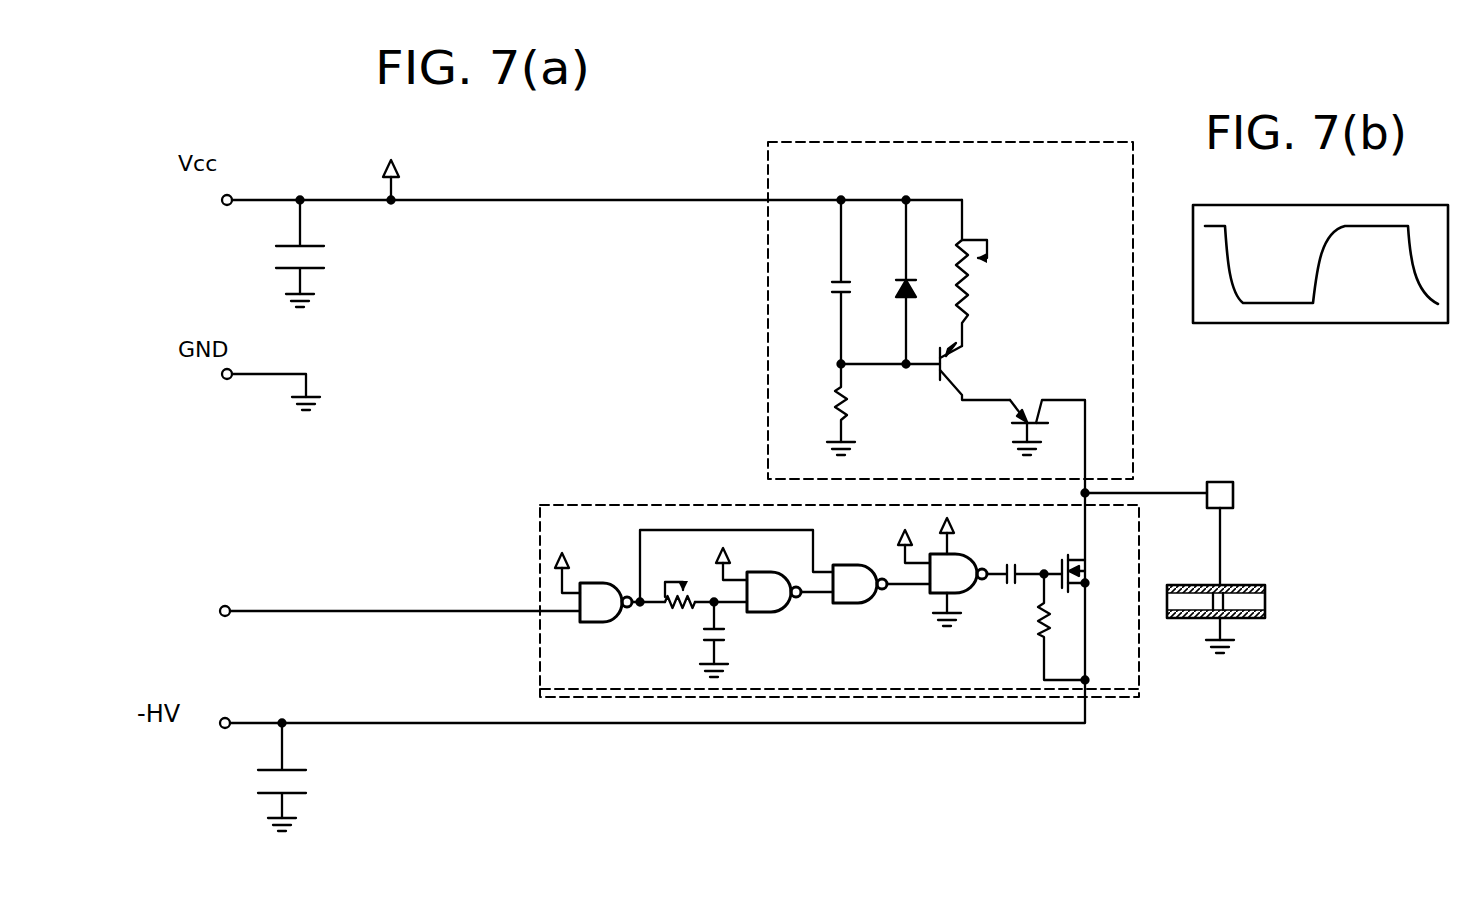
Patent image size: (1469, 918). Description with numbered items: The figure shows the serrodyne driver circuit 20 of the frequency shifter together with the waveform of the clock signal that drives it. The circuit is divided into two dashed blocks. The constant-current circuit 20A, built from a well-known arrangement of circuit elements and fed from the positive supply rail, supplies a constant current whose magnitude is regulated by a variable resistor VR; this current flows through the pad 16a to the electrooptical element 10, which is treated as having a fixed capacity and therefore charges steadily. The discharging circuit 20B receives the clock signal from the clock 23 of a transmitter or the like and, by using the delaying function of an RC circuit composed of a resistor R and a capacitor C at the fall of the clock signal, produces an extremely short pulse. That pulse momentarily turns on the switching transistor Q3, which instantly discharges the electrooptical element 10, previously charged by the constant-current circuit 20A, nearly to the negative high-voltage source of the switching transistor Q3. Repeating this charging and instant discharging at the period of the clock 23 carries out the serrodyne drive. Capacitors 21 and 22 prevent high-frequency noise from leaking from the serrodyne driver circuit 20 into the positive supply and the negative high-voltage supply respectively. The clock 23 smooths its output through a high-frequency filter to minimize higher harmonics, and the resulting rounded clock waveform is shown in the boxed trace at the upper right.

The serrodyne driver circuit 20 is at (743, 99).
The constant-current circuit 20A is at (928, 126).
The discharging circuit 20B is at (668, 487).
The capacitor 21 is at (281, 253).
The capacitor 22 is at (264, 777).
The clock 23 is at (354, 602).
The pad 16a is at (1220, 482).
The electrooptical element 10 is at (1289, 567).
The switching transistor Q3 is at (1095, 573).
The variable resistor VR is at (982, 273).
The resistor R is at (680, 579).
The capacitor C is at (701, 639).